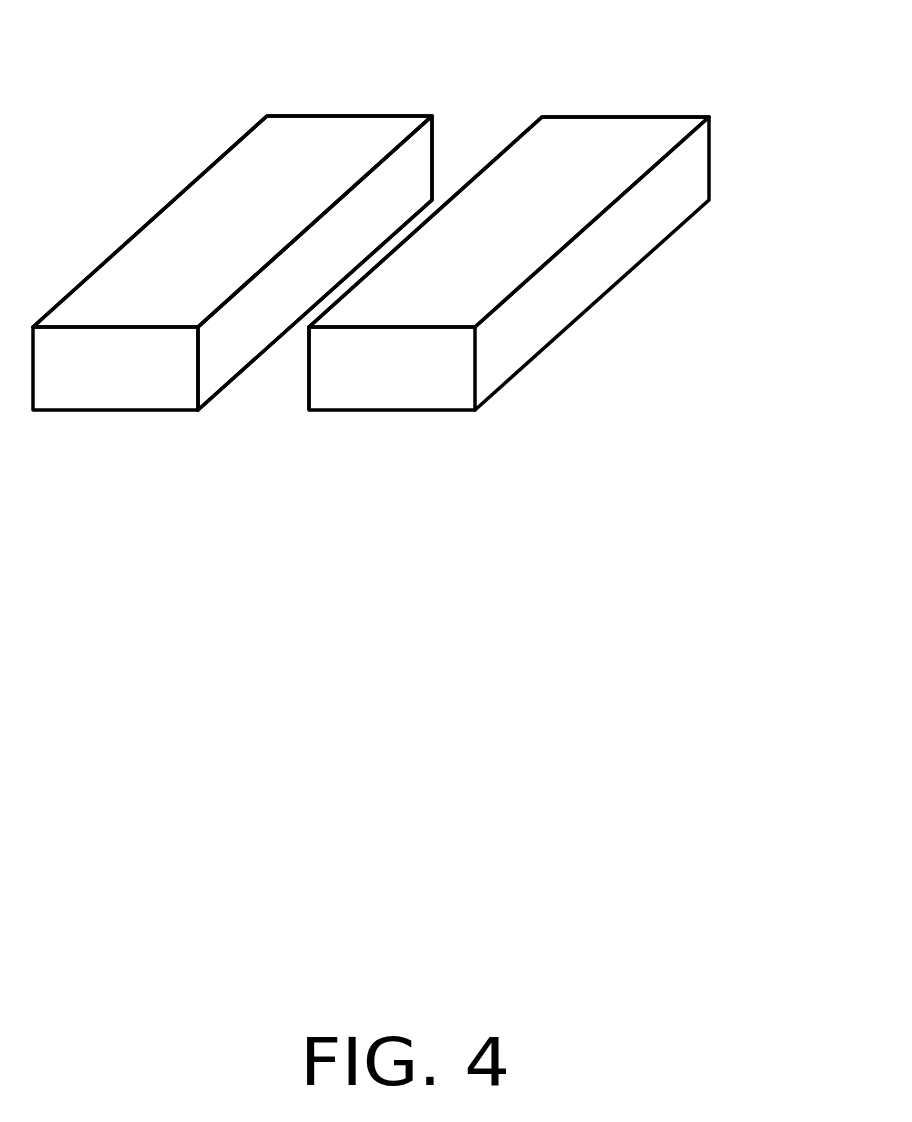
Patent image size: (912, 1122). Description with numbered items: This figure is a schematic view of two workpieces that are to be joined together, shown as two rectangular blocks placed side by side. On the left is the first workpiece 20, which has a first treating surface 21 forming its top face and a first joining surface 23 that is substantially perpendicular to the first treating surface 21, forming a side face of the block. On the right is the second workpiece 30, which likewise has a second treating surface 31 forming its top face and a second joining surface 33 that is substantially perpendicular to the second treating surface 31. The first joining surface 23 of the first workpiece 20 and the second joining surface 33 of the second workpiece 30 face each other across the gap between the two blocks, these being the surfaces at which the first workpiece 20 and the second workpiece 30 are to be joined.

The first workpiece 20 is at (246, 92).
The first treating surface 21 is at (192, 225).
The first joining surface 23 is at (417, 162).
The second workpiece 30 is at (657, 86).
The second treating surface 31 is at (593, 157).
The second joining surface 33 is at (302, 379).